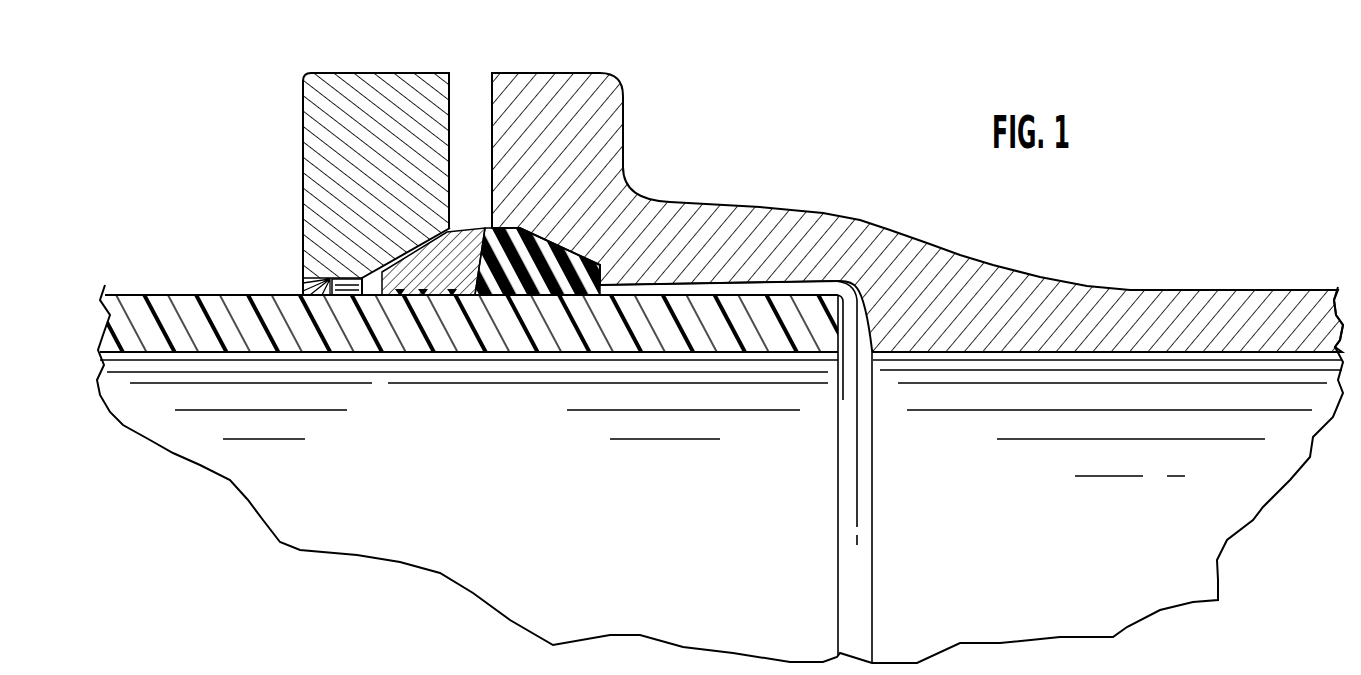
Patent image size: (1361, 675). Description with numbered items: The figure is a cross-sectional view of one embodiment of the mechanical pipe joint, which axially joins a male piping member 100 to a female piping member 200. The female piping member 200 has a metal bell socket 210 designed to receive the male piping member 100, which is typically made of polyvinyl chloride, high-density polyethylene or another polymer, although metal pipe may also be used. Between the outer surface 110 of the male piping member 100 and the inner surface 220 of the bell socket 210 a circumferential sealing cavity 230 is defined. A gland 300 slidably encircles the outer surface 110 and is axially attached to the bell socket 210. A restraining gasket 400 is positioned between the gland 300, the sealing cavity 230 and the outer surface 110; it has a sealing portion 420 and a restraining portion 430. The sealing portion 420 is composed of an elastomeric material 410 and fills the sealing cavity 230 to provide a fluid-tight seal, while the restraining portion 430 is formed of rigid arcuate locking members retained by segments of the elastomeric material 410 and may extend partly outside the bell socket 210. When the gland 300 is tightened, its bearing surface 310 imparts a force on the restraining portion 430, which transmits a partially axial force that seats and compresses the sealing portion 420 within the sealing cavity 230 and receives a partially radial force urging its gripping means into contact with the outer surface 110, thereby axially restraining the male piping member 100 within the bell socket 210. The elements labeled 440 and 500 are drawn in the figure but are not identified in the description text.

The male piping member 100 is at (387, 323).
The outer surface 110 is at (213, 297).
The female piping member 200 is at (917, 212).
The bell socket 210 is at (752, 203).
The inner surface 220 is at (562, 277).
The sealing cavity 230 is at (579, 236).
The gland 300 is at (330, 73).
The bearing surface 310 is at (470, 267).
The restraining gasket 400 is at (600, 450).
The elastomeric material 410 is at (549, 250).
The sealing portion 420 is at (473, 387).
The restraining portion 430 is at (380, 387).
The spacer element 440 is at (472, 270).
The gap space 500 is at (672, 125).